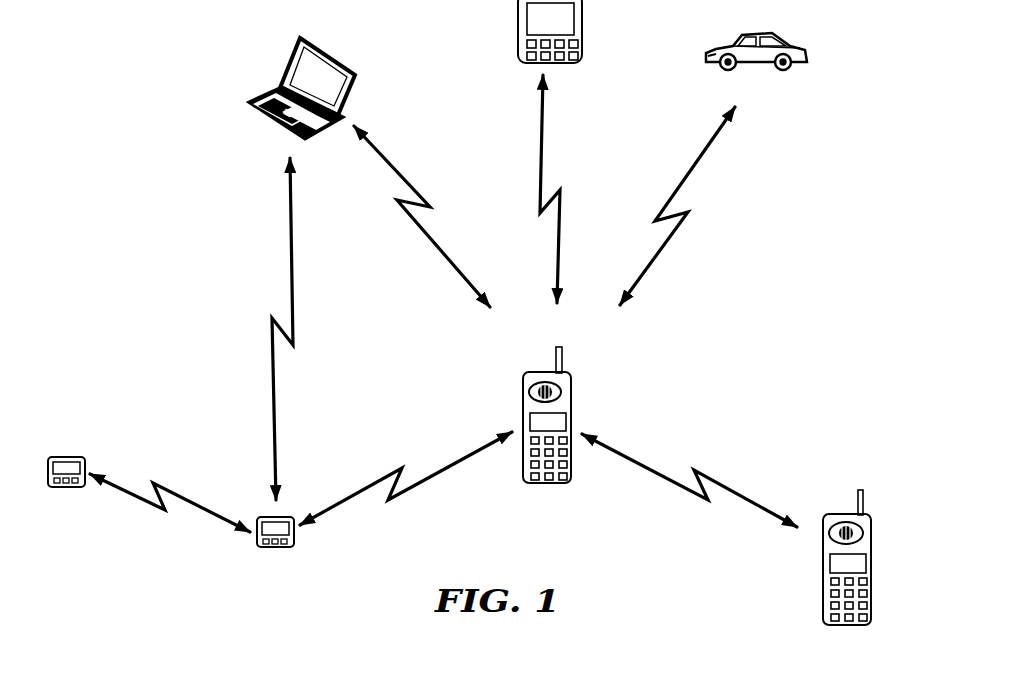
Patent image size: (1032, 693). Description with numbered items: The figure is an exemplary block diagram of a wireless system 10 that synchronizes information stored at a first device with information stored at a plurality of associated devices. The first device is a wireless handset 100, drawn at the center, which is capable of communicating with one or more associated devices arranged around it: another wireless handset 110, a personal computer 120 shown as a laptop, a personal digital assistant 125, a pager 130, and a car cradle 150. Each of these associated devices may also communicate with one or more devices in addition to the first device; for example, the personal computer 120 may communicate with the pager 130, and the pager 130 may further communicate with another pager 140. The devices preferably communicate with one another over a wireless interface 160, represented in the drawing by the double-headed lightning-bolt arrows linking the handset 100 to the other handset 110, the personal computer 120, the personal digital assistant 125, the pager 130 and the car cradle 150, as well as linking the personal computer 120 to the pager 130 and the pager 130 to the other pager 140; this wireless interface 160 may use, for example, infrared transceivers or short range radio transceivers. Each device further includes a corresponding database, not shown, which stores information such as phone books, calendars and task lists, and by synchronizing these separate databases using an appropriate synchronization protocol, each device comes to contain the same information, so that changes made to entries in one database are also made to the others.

The wireless system 10 is at (822, 243).
The wireless handset 100 is at (547, 484).
The wireless handset 110 is at (845, 628).
The personal computer 120 is at (352, 68).
The personal digital assistant 125 is at (583, 20).
The pager 130 is at (295, 538).
The pager 140 is at (68, 457).
The car cradle 150 is at (786, 68).
The wireless interface 160 is at (433, 248).